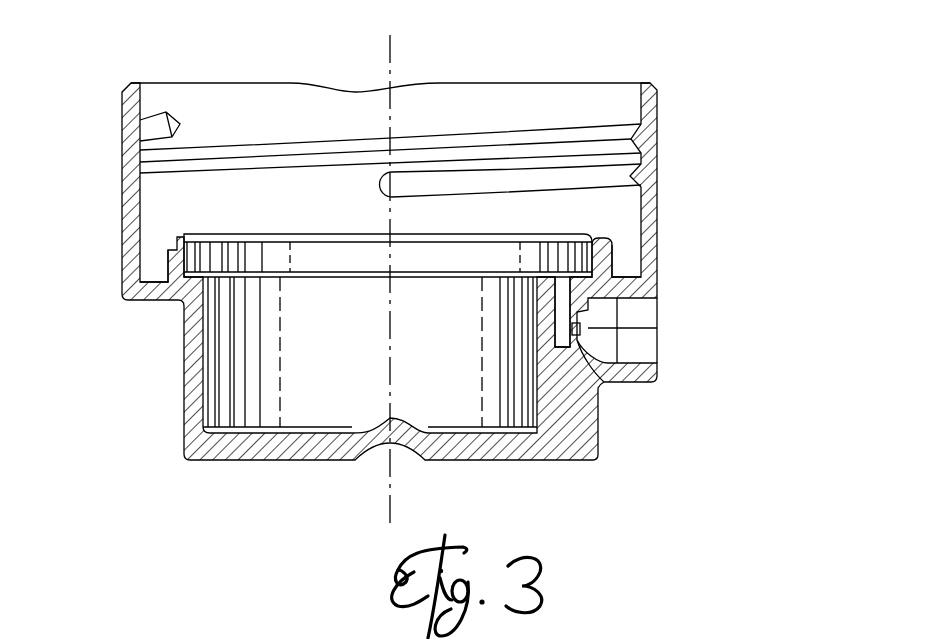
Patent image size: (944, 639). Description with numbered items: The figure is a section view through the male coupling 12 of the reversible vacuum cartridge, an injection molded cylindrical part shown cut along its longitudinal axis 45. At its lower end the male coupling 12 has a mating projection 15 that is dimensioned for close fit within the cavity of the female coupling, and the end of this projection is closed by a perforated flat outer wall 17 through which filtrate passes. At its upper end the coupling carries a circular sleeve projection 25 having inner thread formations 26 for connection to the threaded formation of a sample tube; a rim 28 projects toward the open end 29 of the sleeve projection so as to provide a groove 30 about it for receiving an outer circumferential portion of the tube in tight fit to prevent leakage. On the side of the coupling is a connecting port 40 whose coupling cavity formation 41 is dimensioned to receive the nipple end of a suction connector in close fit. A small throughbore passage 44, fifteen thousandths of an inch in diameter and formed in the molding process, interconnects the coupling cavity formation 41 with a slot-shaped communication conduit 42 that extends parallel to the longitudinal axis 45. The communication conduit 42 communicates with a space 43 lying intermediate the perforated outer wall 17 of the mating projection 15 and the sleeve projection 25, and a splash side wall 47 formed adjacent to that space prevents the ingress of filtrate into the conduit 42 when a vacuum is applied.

The male coupling 12 is at (693, 187).
The mating projection 15 is at (186, 405).
The perforated flat outer wall 17 is at (280, 447).
The circular sleeve projection 25 is at (645, 150).
The inner thread formations 26 is at (343, 148).
The rim 28 is at (178, 251).
The open end 29 is at (533, 82).
The groove 30 is at (155, 260).
The connecting port 40 is at (625, 315).
The coupling cavity formation 41 is at (628, 347).
The communication conduit 42 is at (572, 330).
The space 43 is at (582, 246).
The throughbore passage 44 is at (603, 383).
The longitudinal axis 45 is at (388, 378).
The splash side wall 47 is at (543, 305).